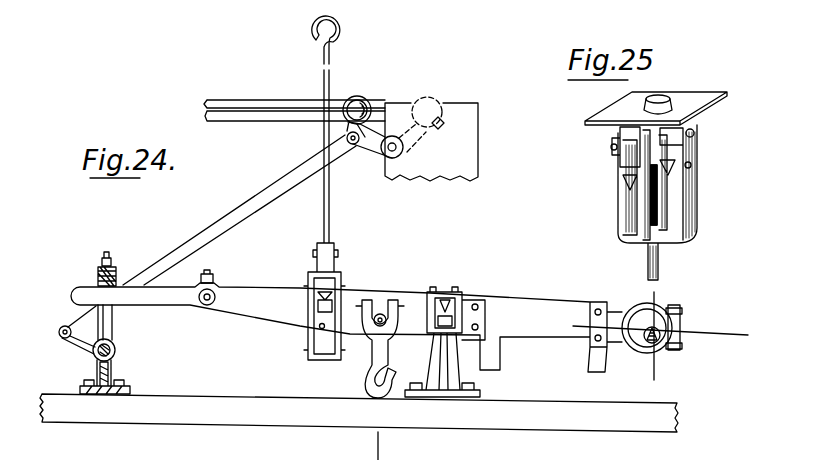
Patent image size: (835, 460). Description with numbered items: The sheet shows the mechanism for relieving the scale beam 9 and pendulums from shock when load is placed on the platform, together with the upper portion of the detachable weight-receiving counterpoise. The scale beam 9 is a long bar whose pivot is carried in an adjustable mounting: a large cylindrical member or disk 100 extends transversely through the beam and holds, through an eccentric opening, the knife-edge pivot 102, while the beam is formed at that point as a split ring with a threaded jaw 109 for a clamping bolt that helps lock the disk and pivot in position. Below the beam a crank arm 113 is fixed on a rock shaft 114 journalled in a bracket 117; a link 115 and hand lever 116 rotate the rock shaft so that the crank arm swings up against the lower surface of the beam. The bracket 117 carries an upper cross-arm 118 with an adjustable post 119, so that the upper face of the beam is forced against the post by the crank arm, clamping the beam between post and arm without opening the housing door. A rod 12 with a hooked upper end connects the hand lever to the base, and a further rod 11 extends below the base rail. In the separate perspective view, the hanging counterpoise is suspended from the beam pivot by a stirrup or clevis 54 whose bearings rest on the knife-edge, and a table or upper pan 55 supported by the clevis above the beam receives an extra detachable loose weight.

In FIG. 24, the scale beam 9 is at (522, 302).
In FIG. 24, the rod 11 is at (381, 452).
In FIG. 24, the hook rod 12 is at (332, 216).
In FIG. 24, the cylindrical member or disk 100 is at (650, 320).
In FIG. 24, the knife-edge pivot 102 is at (648, 341).
In FIG. 24, the threaded jaw 109 is at (680, 322).
In FIG. 24, the crank arm 113 is at (108, 327).
In FIG. 24, the rock shaft 114 is at (95, 355).
In FIG. 24, the link 115 is at (244, 210).
In FIG. 24, the hand lever 116 is at (366, 100).
In FIG. 24, the bracket 117 is at (113, 369).
In FIG. 24, the upper cross-arm 118 is at (116, 273).
In FIG. 24, the adjustable post 119 is at (107, 257).
In FIG. 25, the stirrup or clevis 54 is at (692, 192).
In FIG. 25, the table or upper pan 55 is at (702, 101).